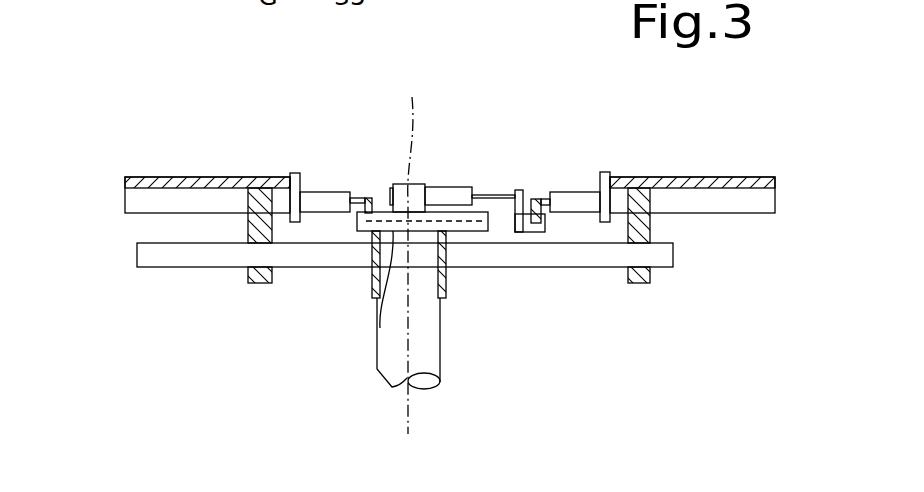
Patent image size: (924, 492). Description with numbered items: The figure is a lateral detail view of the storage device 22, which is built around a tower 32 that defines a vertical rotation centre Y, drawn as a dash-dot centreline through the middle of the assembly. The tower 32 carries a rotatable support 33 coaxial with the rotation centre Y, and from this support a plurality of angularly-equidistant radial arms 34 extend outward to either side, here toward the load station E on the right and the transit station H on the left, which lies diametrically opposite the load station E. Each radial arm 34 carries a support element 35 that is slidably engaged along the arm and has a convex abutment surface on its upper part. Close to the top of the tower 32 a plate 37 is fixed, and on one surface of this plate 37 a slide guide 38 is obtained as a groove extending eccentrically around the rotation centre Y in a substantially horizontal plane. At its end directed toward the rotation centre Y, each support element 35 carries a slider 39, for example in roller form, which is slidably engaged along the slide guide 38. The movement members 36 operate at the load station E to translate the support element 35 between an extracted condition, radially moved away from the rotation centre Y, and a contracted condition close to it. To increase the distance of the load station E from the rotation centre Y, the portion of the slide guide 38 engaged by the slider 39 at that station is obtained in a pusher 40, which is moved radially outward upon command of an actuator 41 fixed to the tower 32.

The storage device 22 is at (297, 129).
The tower 32 is at (423, 347).
The rotatable support 33 is at (447, 292).
The radial arm 34 is at (309, 257).
The support element 35 is at (143, 177).
The movement members 36 is at (475, 172).
The plate 37 is at (378, 328).
The slide guide 38 is at (435, 218).
The slider 39 is at (370, 198).
The pusher 40 is at (527, 192).
The actuator 41 is at (437, 197).
The rotation centre Y is at (411, 252).
The transit station H is at (115, 196).
The load station E is at (770, 226).